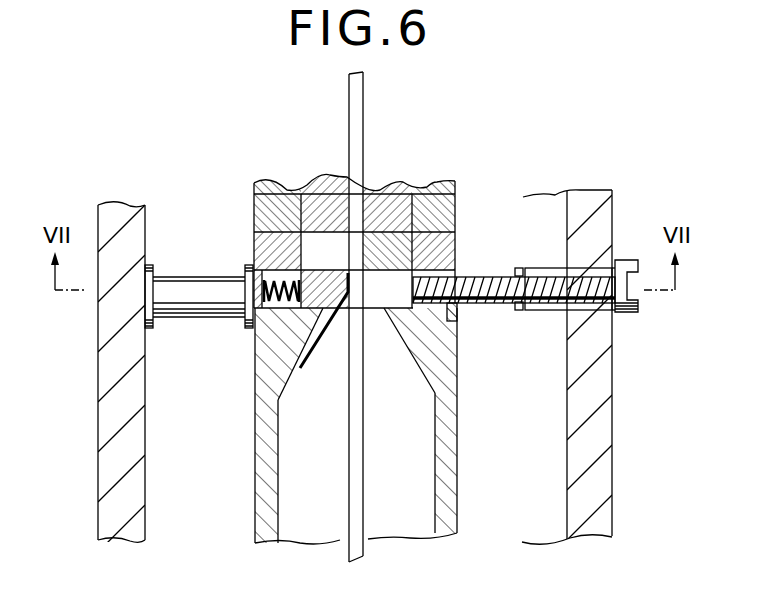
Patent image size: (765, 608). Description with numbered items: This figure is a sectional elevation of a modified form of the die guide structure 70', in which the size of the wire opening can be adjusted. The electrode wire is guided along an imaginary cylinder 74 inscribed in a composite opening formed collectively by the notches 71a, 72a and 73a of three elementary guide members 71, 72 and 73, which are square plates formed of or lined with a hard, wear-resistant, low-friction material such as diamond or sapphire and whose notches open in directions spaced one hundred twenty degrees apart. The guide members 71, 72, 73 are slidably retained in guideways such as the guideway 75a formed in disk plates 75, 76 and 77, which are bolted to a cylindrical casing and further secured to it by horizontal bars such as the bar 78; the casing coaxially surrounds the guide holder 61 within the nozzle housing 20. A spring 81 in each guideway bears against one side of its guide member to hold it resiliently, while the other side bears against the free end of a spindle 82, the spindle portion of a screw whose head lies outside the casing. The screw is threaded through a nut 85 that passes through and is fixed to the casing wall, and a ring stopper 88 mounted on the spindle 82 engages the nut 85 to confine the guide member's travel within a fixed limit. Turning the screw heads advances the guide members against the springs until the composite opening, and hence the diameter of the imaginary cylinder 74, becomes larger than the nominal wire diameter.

The modified die guide structure 70' is at (514, 167).
The imaginary cylinder 74 is at (363, 134).
The elementary guide member 73 is at (373, 197).
The notch 73a is at (313, 187).
The elementary guide member 72 is at (433, 190).
The notch 72a is at (330, 295).
The disk plate 77 is at (258, 225).
The disk plate 76 is at (258, 258).
The disk plate 75 is at (261, 280).
The guideway 75a is at (440, 270).
The horizontal bar 78 is at (180, 313).
The spring 81 is at (270, 326).
The spindle 82 is at (485, 313).
The ring stopper 88 is at (519, 308).
The nut 85 is at (590, 318).
The elementary guide member 71 is at (457, 340).
The notch 71a is at (388, 315).
The guide holder 61 is at (452, 468).
The nozzle housing 20 is at (560, 372).